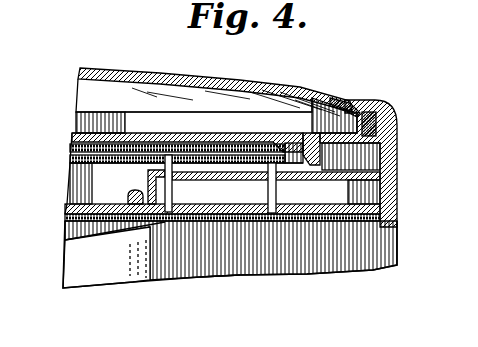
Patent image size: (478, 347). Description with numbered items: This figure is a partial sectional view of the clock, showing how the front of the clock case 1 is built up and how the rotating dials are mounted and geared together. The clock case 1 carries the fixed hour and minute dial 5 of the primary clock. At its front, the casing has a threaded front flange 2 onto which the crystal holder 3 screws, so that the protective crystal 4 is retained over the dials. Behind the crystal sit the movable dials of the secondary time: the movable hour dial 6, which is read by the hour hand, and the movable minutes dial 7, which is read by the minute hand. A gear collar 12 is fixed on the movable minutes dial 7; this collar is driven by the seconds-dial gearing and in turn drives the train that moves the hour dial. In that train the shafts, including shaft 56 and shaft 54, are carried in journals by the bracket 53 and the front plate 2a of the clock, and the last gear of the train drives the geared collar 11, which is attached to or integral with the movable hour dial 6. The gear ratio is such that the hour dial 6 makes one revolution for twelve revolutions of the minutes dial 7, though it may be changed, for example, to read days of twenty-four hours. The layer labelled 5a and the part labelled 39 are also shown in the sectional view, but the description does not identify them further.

The clock case 1 is at (97, 260).
The threaded front flange 2 is at (376, 122).
The front plate 2a is at (245, 212).
The crystal holder 3 is at (383, 110).
The protective crystal 4 is at (182, 78).
The hour and minute dial 5 is at (358, 112).
The spacer layer 5a is at (213, 138).
The movable hour dial 6 is at (328, 115).
The movable minutes dial 7 is at (290, 140).
The geared collar 11 is at (322, 158).
The gear collar 12 is at (279, 133).
The base section 39 is at (240, 311).
The bracket 53 is at (318, 189).
The shaft 54 is at (272, 162).
The shaft 56 is at (180, 165).